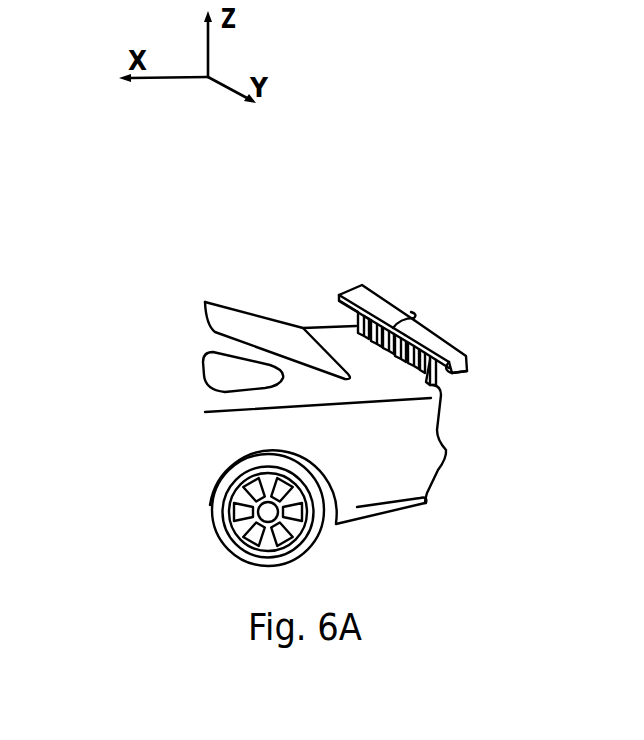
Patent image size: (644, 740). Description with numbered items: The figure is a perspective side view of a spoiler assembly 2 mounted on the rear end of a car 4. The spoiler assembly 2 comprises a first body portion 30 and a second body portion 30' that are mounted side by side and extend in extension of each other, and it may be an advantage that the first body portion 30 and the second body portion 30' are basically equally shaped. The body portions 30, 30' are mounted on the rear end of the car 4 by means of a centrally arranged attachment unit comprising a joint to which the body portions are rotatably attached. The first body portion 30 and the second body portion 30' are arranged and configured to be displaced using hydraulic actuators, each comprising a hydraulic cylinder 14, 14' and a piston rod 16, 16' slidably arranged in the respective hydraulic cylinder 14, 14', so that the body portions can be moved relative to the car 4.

The spoiler assembly 2 is at (405, 323).
The car 4 is at (469, 448).
The hydraulic cylinder 14 is at (466, 397).
The hydraulic cylinder 14' is at (323, 313).
The piston rod 16 is at (493, 379).
The piston rod 16' is at (320, 283).
The first body portion 30 is at (456, 324).
The second body portion 30' is at (382, 277).